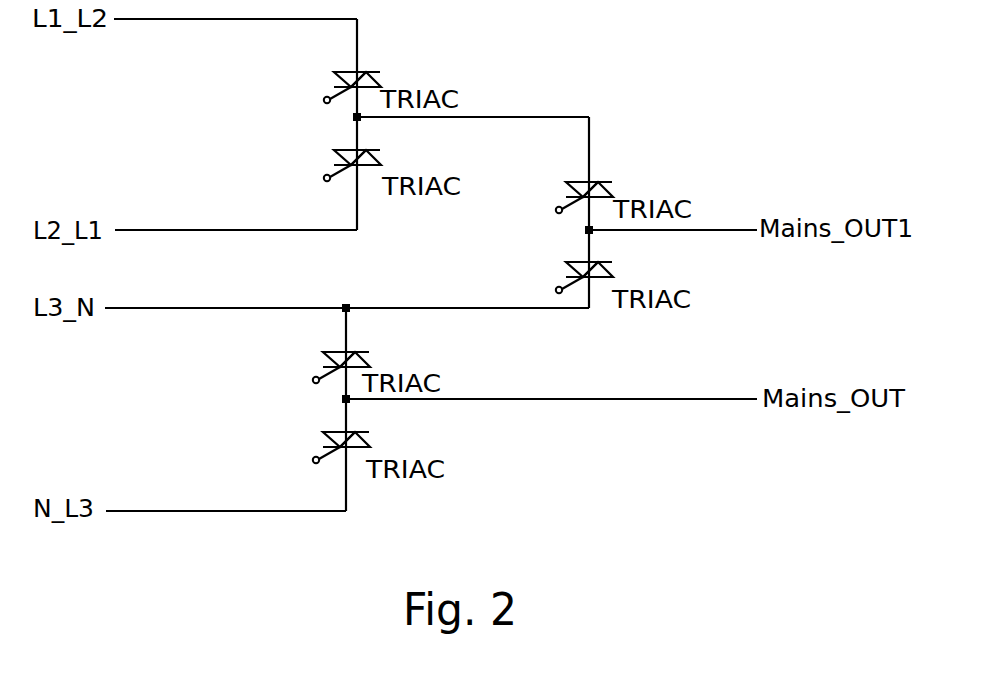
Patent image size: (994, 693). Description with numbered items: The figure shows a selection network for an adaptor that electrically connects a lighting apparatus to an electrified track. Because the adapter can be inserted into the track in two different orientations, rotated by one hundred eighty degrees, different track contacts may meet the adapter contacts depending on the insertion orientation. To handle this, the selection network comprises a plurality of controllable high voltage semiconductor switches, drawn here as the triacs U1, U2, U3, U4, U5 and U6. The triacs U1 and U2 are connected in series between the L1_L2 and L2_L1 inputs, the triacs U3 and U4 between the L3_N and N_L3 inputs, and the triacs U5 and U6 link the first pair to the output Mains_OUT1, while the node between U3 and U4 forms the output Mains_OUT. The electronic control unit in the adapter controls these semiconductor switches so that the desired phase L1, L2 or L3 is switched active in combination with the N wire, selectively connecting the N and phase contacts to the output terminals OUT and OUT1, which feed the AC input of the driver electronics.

The triac U1 is at (364, 70).
The triac U2 is at (362, 151).
The triac U3 is at (356, 350).
The triac U4 is at (356, 433).
The triac U5 is at (594, 180).
The triac U6 is at (594, 263).